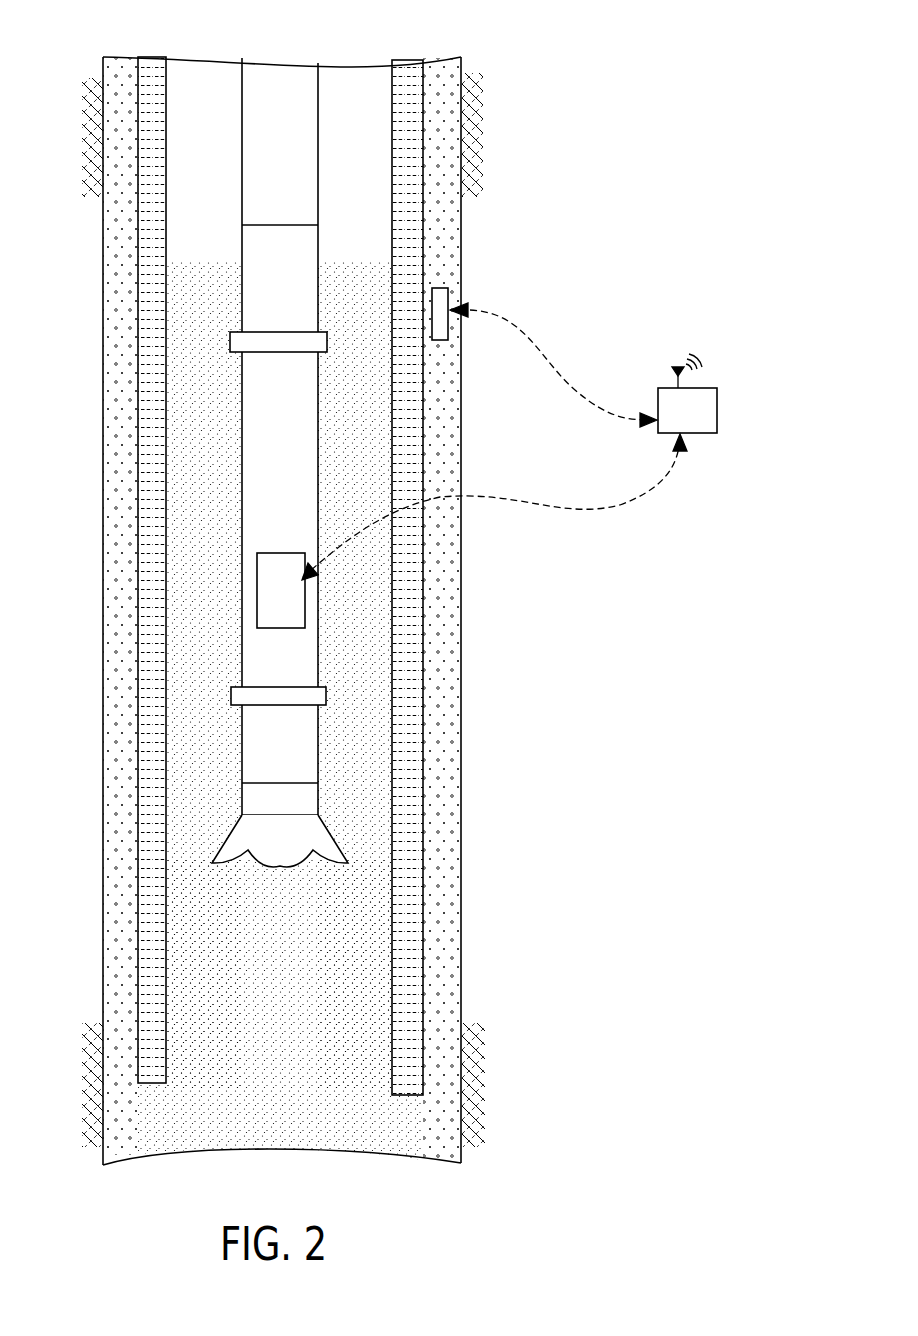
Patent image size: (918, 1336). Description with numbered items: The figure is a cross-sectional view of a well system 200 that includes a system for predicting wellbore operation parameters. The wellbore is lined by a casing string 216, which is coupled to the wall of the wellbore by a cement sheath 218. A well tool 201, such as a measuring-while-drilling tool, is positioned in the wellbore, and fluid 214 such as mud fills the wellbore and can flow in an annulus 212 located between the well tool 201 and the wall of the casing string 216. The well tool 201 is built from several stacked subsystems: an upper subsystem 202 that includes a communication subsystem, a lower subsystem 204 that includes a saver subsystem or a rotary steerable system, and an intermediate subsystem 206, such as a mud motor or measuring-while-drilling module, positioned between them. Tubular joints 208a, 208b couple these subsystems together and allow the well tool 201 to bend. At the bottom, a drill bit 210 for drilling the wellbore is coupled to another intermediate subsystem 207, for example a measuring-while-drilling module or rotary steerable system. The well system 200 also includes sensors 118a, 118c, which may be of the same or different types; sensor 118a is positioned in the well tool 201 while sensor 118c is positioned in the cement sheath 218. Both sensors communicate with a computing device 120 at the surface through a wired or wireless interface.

The well system 200 is at (545, 97).
The well tool 201 is at (257, 122).
The annulus 212 is at (204, 68).
The subsystem 202 is at (303, 292).
The sensor 118c is at (448, 292).
The tubular joint 208a is at (230, 342).
The intermediate subsystem 206 is at (257, 419).
The casing string 216 is at (147, 473).
The cement sheath 218 is at (122, 558).
The tubular joint 208b is at (231, 690).
The sensor 118a is at (305, 612).
The subsystem 204 is at (305, 748).
The intermediate subsystem 207 is at (310, 800).
The drill bit 210 is at (285, 850).
The fluid 214 is at (318, 1143).
The computing device 120 is at (717, 404).